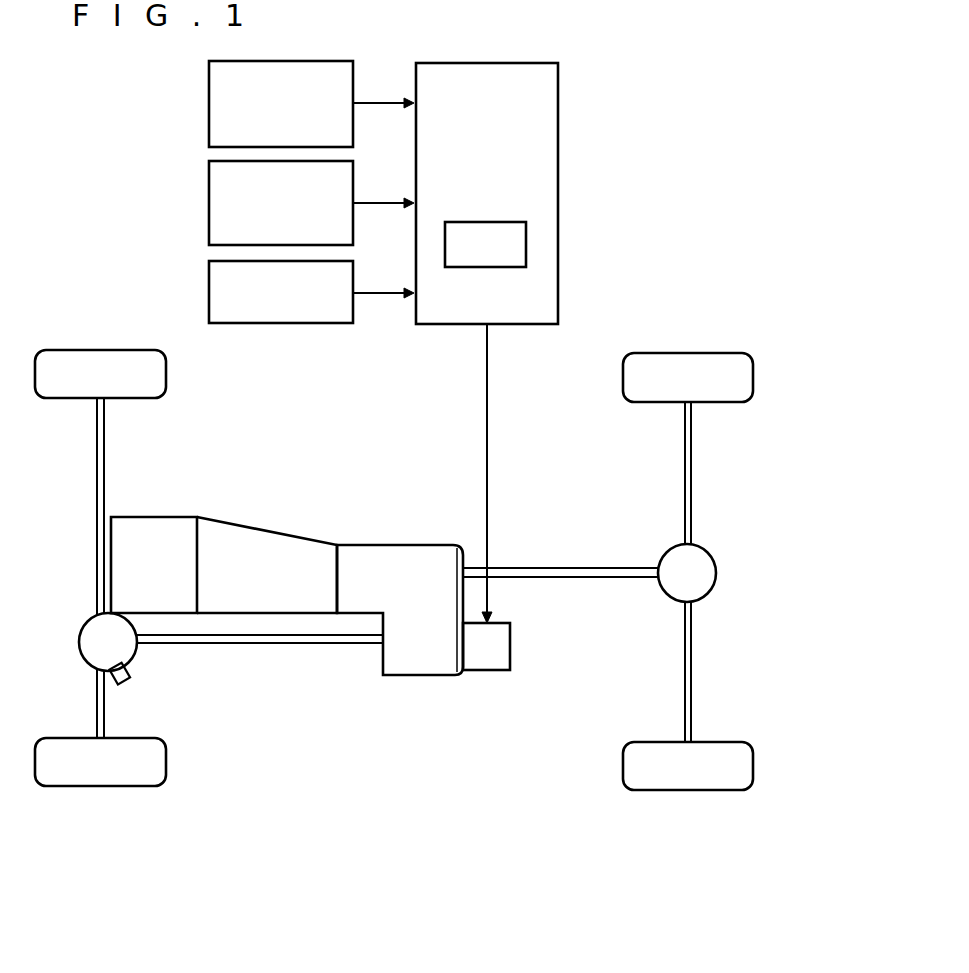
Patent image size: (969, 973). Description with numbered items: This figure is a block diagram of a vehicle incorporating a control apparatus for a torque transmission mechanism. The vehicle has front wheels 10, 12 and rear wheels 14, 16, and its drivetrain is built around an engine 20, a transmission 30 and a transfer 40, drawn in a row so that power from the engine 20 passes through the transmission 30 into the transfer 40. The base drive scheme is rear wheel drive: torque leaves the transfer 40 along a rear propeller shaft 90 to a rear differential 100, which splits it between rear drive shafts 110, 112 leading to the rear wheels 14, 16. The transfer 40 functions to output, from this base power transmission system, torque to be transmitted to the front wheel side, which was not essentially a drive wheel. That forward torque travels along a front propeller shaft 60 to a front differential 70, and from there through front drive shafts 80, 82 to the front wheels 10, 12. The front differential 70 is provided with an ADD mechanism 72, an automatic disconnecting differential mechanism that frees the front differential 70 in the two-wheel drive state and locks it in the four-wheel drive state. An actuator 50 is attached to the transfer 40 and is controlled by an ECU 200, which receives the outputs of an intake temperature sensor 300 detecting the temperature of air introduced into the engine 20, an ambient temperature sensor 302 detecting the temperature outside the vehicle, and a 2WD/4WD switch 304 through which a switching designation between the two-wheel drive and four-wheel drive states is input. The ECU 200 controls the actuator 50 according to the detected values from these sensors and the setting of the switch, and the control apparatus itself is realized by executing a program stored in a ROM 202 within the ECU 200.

The intake temperature sensor 300 is at (209, 100).
The ambient temperature sensor 302 is at (209, 200).
The 2WD/4WD switch 304 is at (209, 292).
The ECU 200 is at (540, 343).
The ROM 202 is at (526, 243).
The front wheel 10 is at (75, 351).
The front wheel 12 is at (65, 786).
The rear wheel 14 is at (707, 353).
The rear wheel 16 is at (710, 790).
The engine 20 is at (148, 517).
The transmission 30 is at (273, 531).
The transfer 40 is at (385, 546).
The actuator 50 is at (490, 670).
The front propeller shaft 60 is at (297, 645).
The front differential 70 is at (85, 632).
The ADD mechanism 72 is at (126, 684).
The front drive shaft 80 is at (97, 466).
The front drive shaft 82 is at (97, 705).
The rear propeller shaft 90 is at (572, 577).
The rear differential 100 is at (717, 568).
The rear drive shaft 110 is at (692, 485).
The rear drive shaft 112 is at (692, 683).